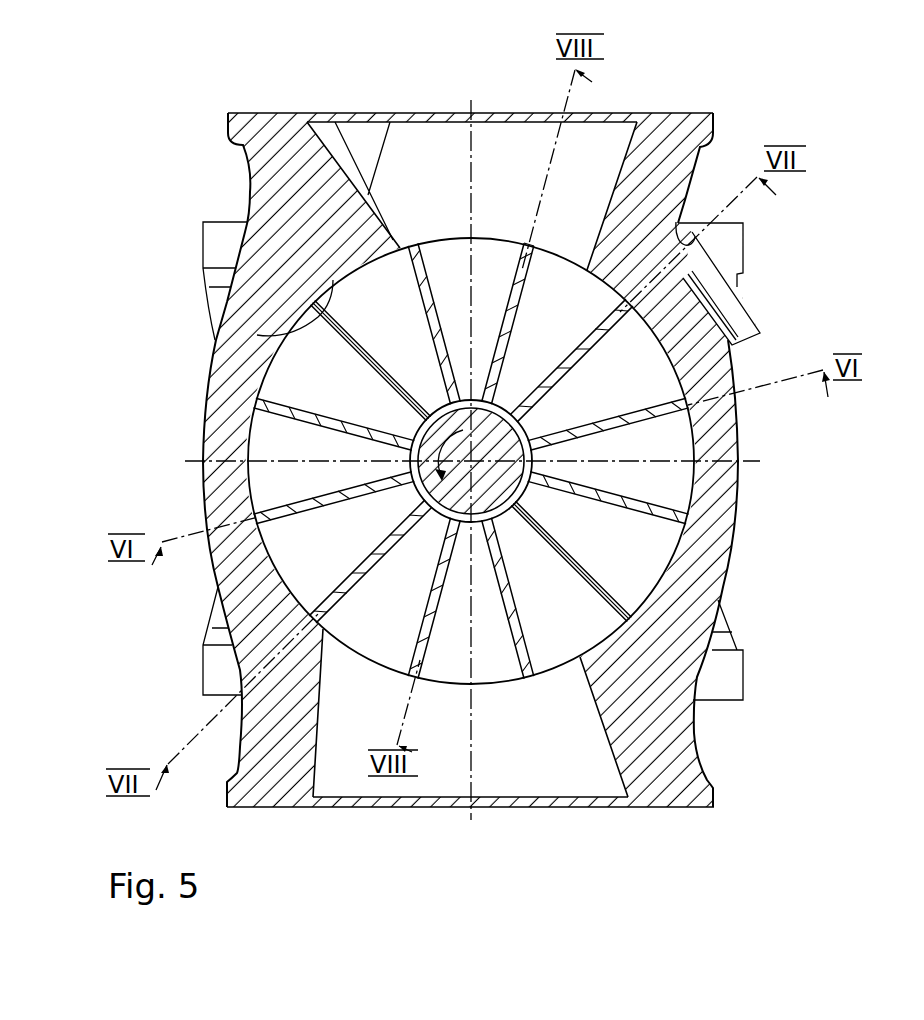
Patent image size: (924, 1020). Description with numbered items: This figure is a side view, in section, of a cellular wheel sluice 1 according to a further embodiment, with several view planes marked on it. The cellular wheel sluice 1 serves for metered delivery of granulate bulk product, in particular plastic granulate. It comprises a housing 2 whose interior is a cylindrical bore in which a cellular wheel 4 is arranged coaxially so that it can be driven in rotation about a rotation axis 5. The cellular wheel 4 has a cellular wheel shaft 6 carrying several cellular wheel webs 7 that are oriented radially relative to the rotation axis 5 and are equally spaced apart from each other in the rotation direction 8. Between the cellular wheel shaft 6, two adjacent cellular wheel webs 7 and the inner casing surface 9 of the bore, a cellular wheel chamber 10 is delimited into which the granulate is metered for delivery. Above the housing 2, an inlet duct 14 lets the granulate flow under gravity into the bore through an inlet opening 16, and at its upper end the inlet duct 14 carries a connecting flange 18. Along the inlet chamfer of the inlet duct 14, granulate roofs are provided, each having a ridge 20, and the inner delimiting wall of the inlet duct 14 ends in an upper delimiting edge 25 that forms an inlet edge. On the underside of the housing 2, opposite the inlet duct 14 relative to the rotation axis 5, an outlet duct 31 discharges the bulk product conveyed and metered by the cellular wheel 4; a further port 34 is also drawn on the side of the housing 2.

The cellular wheel sluice 1 is at (436, 105).
The housing 2 is at (720, 516).
The cellular wheel 4 is at (527, 457).
The rotation axis 5 is at (537, 474).
The cellular wheel shaft 6 is at (507, 437).
The cellular wheel webs 7 is at (650, 560).
The rotation direction 8 is at (437, 457).
The inner casing surface 9 is at (288, 334).
The cellular wheel chamber 10 is at (420, 360).
The inlet duct 14 is at (457, 200).
The inlet opening 16 is at (486, 236).
The connecting flange 18 is at (668, 808).
The ridge 20 is at (366, 188).
The delimiting edge 25 is at (562, 252).
The outlet duct 31 is at (547, 755).
The port connection 34 is at (752, 313).